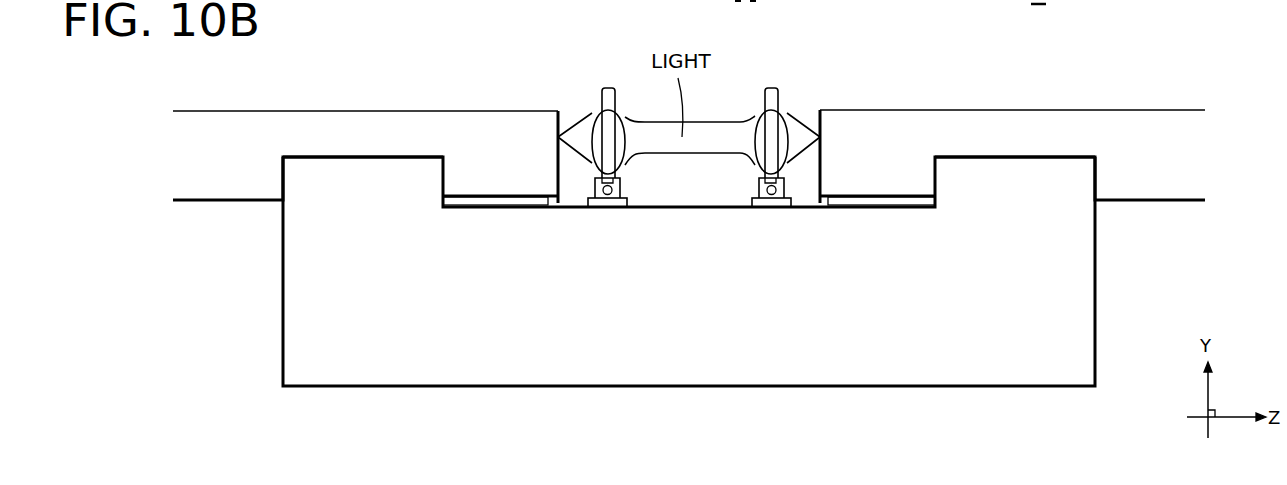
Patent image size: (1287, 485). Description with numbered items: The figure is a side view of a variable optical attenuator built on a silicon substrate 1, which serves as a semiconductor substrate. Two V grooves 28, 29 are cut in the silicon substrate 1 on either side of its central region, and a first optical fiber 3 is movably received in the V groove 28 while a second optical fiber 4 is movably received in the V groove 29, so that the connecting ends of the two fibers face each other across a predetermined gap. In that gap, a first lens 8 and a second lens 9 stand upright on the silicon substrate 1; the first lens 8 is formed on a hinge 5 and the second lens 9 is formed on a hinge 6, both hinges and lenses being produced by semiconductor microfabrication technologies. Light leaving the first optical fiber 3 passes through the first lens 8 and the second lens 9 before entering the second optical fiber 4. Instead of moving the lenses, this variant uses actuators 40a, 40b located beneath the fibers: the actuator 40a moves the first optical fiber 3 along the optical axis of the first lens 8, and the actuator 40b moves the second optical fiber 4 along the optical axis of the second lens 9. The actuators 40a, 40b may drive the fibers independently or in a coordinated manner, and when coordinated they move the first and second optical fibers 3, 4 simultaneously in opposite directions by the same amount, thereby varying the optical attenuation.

The silicon substrate 1 is at (1077, 272).
The first optical fiber 3 is at (436, 132).
The second optical fiber 4 is at (960, 132).
The hinge 5 is at (595, 190).
The hinge 6 is at (784, 190).
The first lens 8 is at (593, 113).
The second lens 9 is at (788, 113).
The V groove 28 is at (347, 188).
The V groove 29 is at (1053, 215).
The actuator 40a is at (492, 206).
The actuator 40b is at (888, 206).